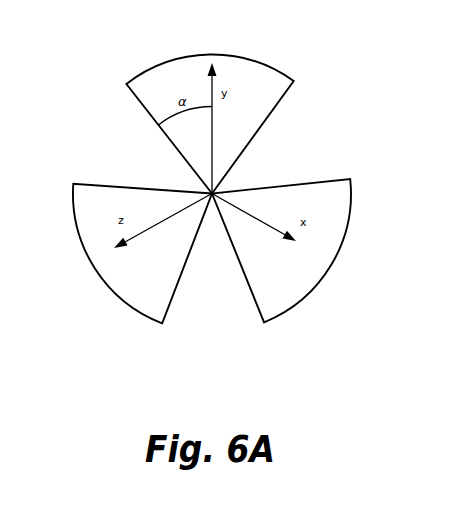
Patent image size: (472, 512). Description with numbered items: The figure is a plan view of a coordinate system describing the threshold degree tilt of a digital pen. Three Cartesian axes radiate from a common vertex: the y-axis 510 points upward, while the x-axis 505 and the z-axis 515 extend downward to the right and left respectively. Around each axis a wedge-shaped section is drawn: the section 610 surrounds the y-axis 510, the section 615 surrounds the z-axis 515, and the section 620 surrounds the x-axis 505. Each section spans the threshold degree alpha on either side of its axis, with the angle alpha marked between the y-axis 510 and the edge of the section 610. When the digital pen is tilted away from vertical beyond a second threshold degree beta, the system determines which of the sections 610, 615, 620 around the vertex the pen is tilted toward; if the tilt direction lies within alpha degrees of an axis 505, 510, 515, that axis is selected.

The x-axis 505 is at (254, 218).
The y-axis 510 is at (211, 128).
The z-axis 515 is at (163, 221).
The section 610 is at (255, 93).
The section 615 is at (146, 198).
The section 620 is at (320, 231).